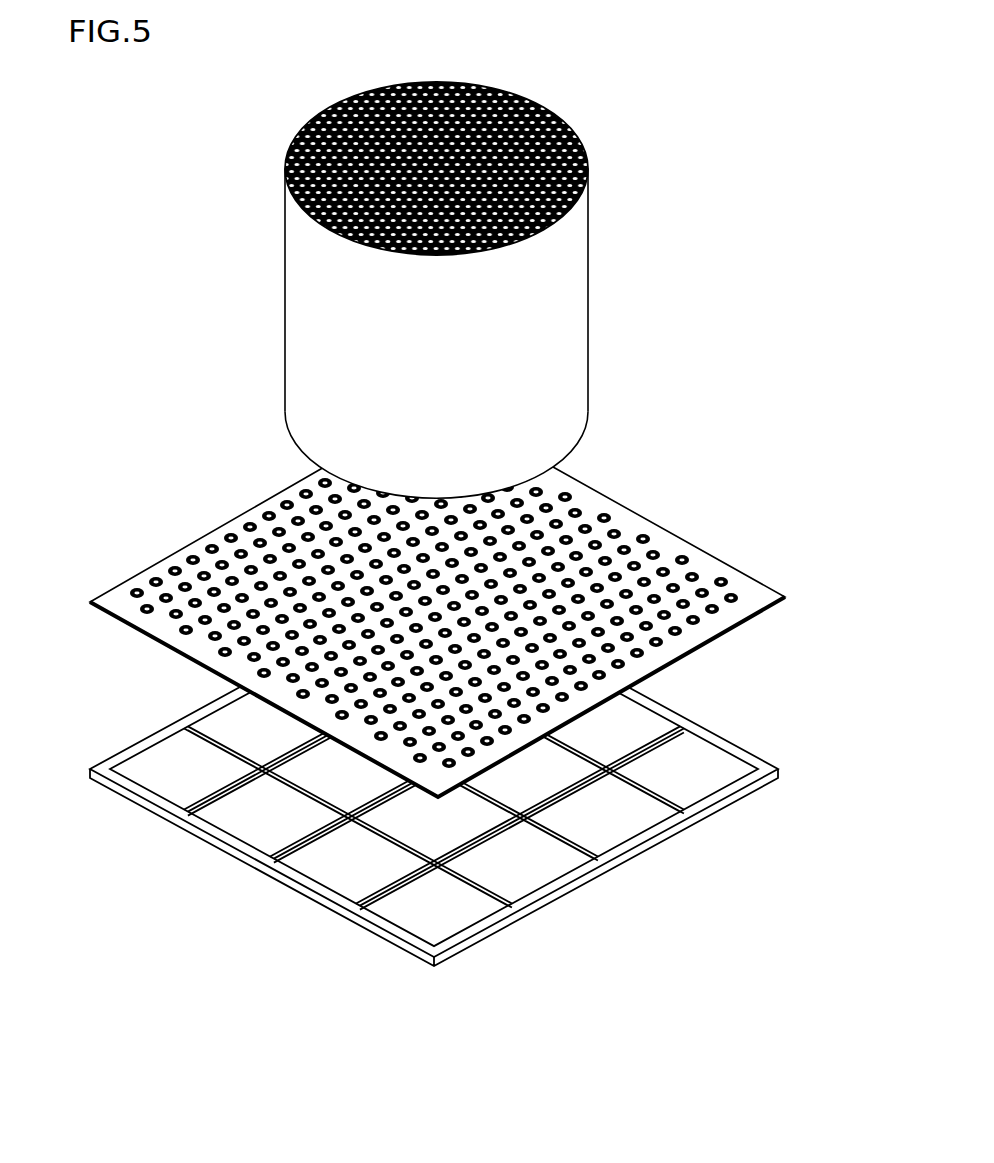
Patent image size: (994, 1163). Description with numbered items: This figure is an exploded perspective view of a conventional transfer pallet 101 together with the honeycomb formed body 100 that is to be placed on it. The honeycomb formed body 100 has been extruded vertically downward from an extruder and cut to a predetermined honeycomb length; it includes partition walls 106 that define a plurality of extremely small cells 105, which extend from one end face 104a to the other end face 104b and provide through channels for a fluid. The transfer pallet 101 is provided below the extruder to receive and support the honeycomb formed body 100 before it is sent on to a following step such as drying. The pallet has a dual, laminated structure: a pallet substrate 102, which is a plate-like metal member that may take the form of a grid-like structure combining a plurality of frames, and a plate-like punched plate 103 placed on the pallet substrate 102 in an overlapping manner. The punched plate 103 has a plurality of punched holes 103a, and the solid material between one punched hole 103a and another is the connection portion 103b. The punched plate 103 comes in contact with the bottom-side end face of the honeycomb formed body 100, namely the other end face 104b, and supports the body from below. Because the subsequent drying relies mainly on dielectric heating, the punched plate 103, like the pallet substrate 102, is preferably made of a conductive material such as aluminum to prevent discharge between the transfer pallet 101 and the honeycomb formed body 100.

The honeycomb formed body 100 is at (417, 259).
The transfer pallet 101 is at (441, 684).
The pallet substrate 102 is at (757, 753).
The punched plate 103 is at (446, 599).
The punched hole 103a is at (577, 511).
The connection portion 103b is at (605, 516).
The one end face 104a is at (454, 137).
The other end face 104b is at (292, 441).
The cells 105 is at (590, 167).
The partition walls 106 is at (414, 81).